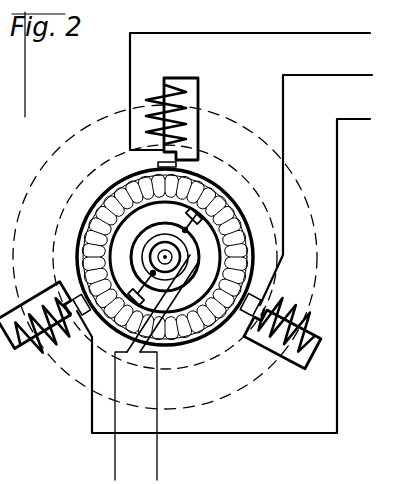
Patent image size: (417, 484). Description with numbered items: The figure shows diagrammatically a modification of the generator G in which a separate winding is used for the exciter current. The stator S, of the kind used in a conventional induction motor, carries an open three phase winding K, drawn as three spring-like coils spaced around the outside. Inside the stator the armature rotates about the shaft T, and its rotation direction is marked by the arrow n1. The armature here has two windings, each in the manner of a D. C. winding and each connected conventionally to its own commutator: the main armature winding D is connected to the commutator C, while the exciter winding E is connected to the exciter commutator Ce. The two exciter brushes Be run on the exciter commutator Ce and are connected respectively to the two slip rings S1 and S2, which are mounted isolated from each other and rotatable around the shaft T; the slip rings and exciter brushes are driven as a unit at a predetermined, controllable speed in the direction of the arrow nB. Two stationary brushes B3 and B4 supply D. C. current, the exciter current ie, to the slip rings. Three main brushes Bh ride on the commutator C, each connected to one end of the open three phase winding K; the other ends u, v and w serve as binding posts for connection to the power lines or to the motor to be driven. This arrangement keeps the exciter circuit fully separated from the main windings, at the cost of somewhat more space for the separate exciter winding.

The generator G is at (165, 240).
The stator S is at (222, 113).
The commutator C is at (228, 204).
The exciter winding E is at (92, 204).
The armature winding D is at (84, 236).
The rotation direction n1 is at (122, 172).
The direction of rotation of the exciter brushes nB is at (205, 226).
The exciter commutator Ce is at (120, 218).
The slip ring S1 is at (137, 257).
The slip ring S2 is at (190, 230).
The shaft T is at (165, 254).
The exciter brushes Be is at (163, 256).
The excitation current ie is at (153, 462).
The stationary brush B3 is at (162, 321).
The stationary brush B4 is at (148, 320).
The open three phase winding K is at (164, 223).
The main brushes Bh is at (88, 312).
The binding post u is at (250, 83).
The binding post v is at (316, 182).
The binding post w is at (223, 268).